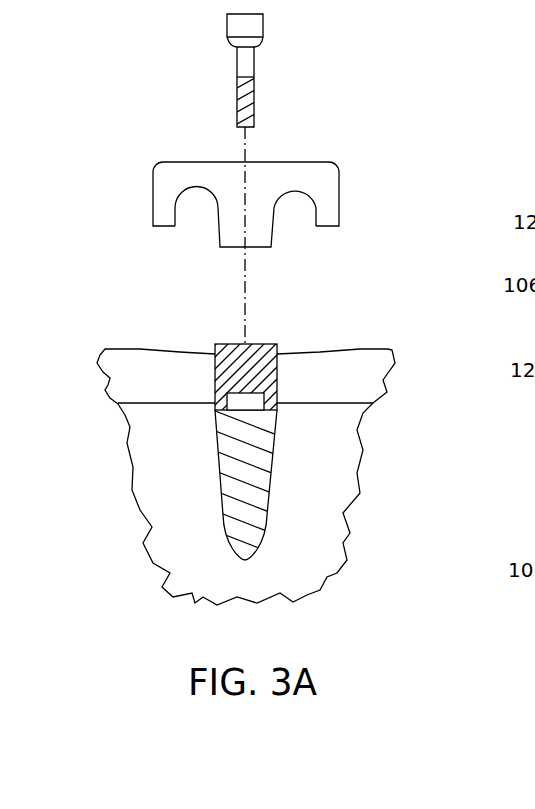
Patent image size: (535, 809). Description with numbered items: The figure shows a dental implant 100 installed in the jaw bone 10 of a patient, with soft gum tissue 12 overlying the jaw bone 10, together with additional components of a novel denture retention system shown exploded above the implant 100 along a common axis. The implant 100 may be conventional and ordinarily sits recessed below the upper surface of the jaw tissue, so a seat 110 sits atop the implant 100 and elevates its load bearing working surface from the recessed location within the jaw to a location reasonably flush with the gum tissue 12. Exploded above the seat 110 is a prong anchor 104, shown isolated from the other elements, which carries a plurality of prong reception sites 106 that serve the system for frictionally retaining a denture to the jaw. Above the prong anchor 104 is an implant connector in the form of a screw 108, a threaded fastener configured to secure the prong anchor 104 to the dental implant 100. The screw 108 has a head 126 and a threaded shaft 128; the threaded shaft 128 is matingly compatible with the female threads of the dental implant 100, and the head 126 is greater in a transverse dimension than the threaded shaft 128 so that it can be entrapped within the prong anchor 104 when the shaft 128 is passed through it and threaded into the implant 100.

The jaw bone 10 is at (163, 488).
The gum tissue 12 is at (142, 362).
The implant 100 is at (284, 487).
The prong anchor 104 is at (325, 203).
The prong reception sites 106 is at (195, 218).
The screw 108 is at (223, 76).
The seat 110 is at (277, 353).
The head 126 is at (258, 29).
The threaded shaft 128 is at (255, 63).